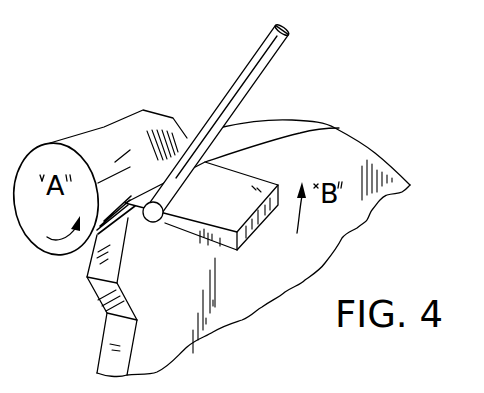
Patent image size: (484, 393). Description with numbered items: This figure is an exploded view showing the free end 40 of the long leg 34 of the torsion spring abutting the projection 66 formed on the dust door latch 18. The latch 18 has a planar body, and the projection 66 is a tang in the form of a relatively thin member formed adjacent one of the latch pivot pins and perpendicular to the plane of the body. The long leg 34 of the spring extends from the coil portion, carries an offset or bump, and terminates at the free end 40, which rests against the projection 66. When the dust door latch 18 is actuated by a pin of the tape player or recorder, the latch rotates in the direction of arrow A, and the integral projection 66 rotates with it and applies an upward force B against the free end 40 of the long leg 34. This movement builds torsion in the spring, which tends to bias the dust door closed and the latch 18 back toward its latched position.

The dust door latch 18 is at (118, 340).
The long leg 34 is at (232, 98).
The free end 40 is at (153, 213).
The projection 66 is at (228, 193).